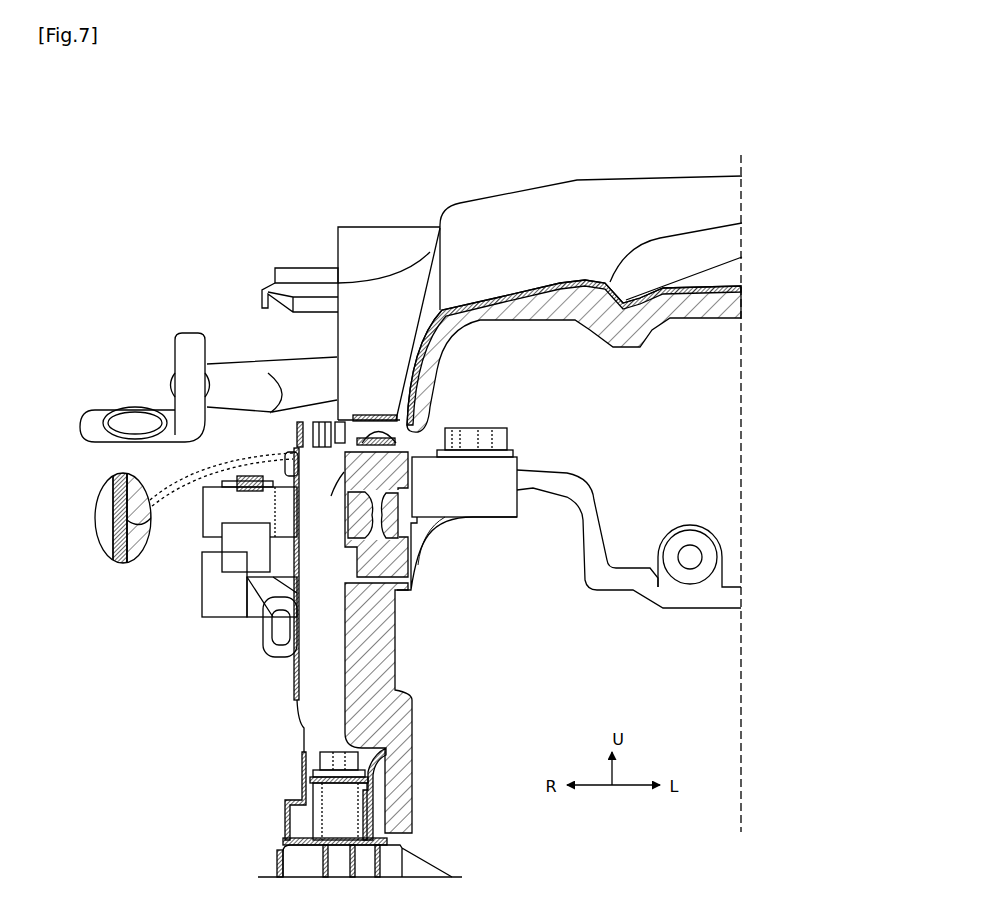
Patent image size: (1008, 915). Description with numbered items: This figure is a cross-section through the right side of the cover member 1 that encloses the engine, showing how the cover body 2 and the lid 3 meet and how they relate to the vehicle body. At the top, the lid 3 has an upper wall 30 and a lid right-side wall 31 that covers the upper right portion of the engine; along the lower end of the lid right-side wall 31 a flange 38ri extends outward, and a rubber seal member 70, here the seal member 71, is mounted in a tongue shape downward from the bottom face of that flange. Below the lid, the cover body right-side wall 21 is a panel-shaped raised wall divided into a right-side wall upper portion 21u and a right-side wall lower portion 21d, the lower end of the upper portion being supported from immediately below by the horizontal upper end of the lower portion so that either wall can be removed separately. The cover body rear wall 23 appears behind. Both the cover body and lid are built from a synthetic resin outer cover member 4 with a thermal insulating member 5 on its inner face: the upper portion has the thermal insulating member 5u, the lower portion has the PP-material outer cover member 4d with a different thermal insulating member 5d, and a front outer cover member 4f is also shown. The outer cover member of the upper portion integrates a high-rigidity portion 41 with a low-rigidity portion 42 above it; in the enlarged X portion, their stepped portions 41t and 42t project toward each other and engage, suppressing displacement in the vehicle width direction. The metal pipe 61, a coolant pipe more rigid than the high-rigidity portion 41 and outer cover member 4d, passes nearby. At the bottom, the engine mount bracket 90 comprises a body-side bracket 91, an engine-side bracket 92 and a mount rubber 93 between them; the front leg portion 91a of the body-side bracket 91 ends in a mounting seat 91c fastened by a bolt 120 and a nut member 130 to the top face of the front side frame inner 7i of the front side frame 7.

The cover member 1 is at (415, 178).
The cover body 2 is at (497, 684).
The lid 3 is at (503, 180).
The upper wall 30 is at (584, 198).
The outer cover member 4 is at (651, 195).
The thermal insulating member 5 is at (630, 346).
The lid right-side wall 31 is at (430, 252).
The flange 38ri is at (376, 415).
The cover body rear wall 23 is at (724, 496).
The metal pipe 61 is at (102, 410).
The seal member 71 is at (297, 432).
The low-rigidity portion 42 is at (285, 458).
The stepped portion 41t is at (148, 520).
The stepped portion 42t is at (110, 532).
The high-rigidity portion 41 is at (112, 548).
The thermal insulating member 5u is at (117, 562).
The engine-side bracket 92 is at (203, 528).
The body-side bracket 91 is at (202, 602).
The mount rubber 93 is at (243, 618).
The engine mount bracket 90 is at (195, 655).
The outer cover member 4f is at (347, 520).
The outer cover member 4d is at (345, 668).
The thermal insulating member 5d is at (415, 806).
The cover body right-side wall 21 is at (482, 619).
The right-side wall upper portion 21u is at (420, 556).
The right-side wall lower portion 21d is at (402, 607).
The front leg portion 91a is at (295, 729).
The bolt 120 is at (316, 758).
The mounting seat 91c is at (300, 786).
The seal member 70 is at (283, 822).
The front side frame 7 is at (277, 865).
The nut member 130 is at (322, 880).
The front side frame inner 7i is at (382, 880).